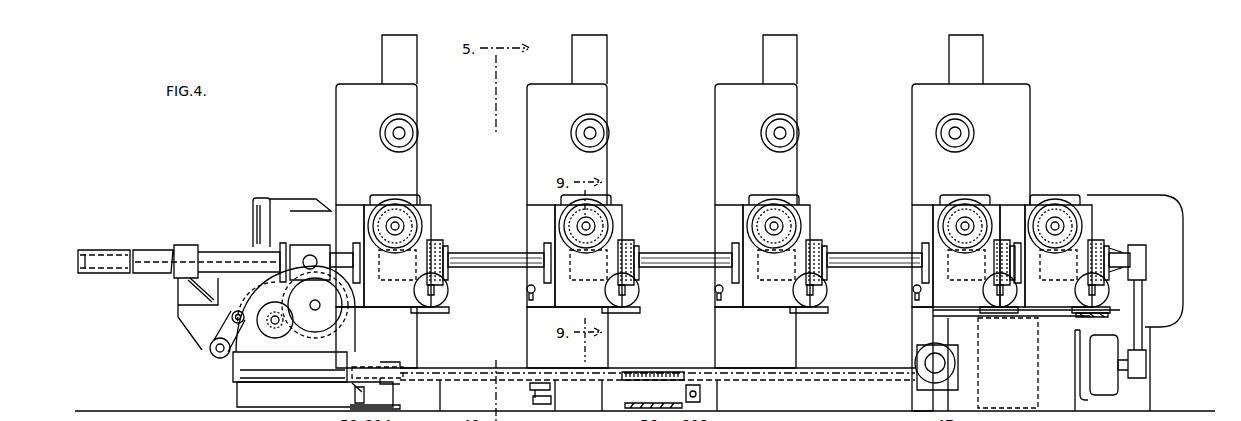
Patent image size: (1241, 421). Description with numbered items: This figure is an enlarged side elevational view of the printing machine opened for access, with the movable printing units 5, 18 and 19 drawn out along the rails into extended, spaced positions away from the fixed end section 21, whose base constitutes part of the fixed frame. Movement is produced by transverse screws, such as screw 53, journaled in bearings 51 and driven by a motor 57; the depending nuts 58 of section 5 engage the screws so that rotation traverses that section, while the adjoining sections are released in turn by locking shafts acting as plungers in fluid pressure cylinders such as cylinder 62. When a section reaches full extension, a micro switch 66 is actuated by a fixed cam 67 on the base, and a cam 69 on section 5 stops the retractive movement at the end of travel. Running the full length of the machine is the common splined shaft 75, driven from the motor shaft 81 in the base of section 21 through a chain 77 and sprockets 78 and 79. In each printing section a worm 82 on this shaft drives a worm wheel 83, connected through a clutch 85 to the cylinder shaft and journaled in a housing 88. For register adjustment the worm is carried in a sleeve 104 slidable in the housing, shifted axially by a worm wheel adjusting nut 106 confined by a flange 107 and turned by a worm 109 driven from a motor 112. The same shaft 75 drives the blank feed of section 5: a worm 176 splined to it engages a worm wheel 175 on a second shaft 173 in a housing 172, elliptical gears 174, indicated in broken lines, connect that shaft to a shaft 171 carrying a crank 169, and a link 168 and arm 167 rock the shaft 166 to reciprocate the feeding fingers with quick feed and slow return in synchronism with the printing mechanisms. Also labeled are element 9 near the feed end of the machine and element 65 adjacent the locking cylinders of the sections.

The printing unit 5 is at (366, 141).
The printing unit 18 is at (560, 141).
The printing unit 19 is at (748, 141).
The fixed end section 21 is at (1002, 155).
The cover 9 is at (253, 216).
The worm 176 is at (310, 245).
The link 168 is at (266, 306).
The arm 167 is at (228, 326).
The rock shaft 166 is at (210, 353).
The crank 169 is at (278, 352).
The shaft 171 is at (308, 345).
The bearings 51 is at (350, 360).
The housing 172 is at (340, 340).
The second shaft 173 is at (340, 306).
The elliptical gears 174 is at (350, 322).
The worm wheel 175 is at (378, 282).
The depending nuts 58 is at (397, 365).
The cam 69 is at (348, 389).
The clutch 85 is at (390, 200).
The housing 88 is at (425, 203).
The worm wheel 83 is at (742, 256).
The sleeve 104 is at (362, 236).
The worm wheel adjusting nut 106 is at (442, 242).
The flange 107 is at (447, 252).
The motor 112 is at (450, 296).
The worm 109 is at (443, 300).
The worm 82 is at (400, 282).
The fluid pressure cylinder 62 is at (526, 292).
The lever 65 is at (528, 304).
The splined shaft 75 is at (860, 255).
The micro switch 66 is at (540, 383).
The fixed cam 67 is at (531, 397).
The transverse screw 53 is at (642, 368).
The chain 77 is at (1148, 320).
The sprocket 79 is at (1147, 268).
The sprocket 78 is at (1147, 366).
The motor shaft 81 is at (1108, 385).
The motor 57 is at (915, 358).